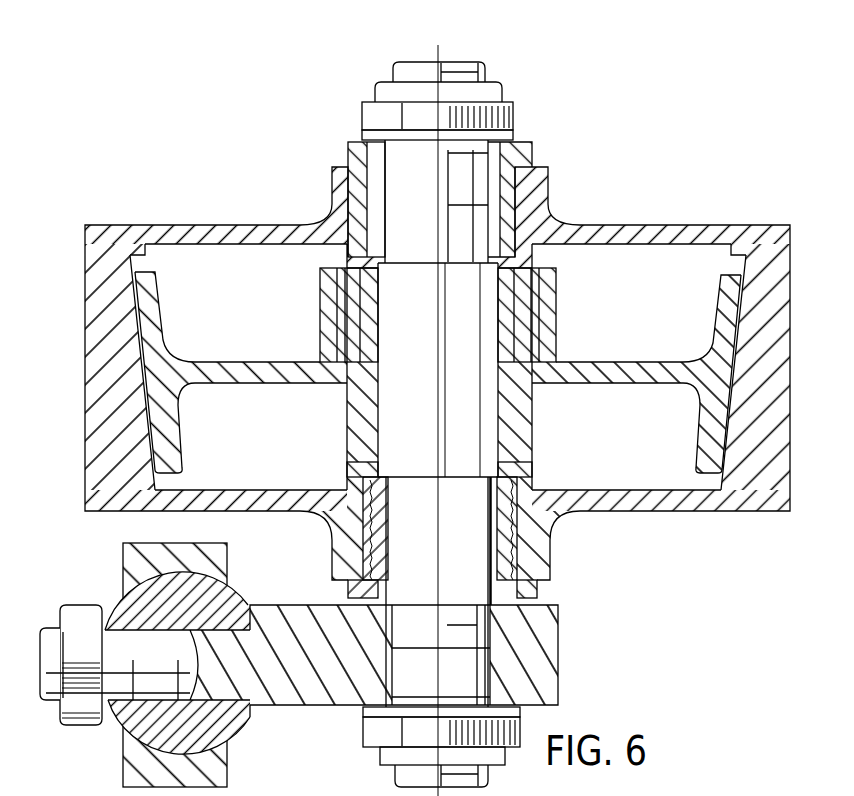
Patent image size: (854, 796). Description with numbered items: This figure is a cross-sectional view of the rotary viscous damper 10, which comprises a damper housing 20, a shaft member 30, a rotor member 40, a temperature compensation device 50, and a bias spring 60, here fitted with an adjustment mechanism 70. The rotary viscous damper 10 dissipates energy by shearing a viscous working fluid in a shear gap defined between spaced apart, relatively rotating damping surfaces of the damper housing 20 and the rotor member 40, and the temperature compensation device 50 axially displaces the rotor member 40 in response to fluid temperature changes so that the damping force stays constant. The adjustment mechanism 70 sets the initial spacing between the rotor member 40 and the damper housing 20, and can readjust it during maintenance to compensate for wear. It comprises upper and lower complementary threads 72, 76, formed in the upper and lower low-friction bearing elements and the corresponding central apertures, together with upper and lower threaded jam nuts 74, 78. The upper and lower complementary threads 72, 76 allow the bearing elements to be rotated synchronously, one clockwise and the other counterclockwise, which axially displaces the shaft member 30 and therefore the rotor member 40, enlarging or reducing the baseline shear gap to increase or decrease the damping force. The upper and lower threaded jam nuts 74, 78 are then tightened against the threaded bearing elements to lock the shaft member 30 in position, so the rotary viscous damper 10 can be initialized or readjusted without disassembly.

The rotary viscous damper 10 is at (661, 188).
The damper housing 20 is at (740, 224).
The shaft member 30 is at (403, 675).
The rotor member 40 is at (175, 333).
The temperature compensation device 50 is at (570, 300).
The bias spring 60 is at (540, 467).
The adjustment mechanism 70 is at (553, 173).
The upper complementary threads 72 is at (367, 186).
The upper threaded jam nut 74 is at (518, 142).
The lower complementary threads 76 is at (360, 562).
The lower threaded jam nut 78 is at (532, 588).